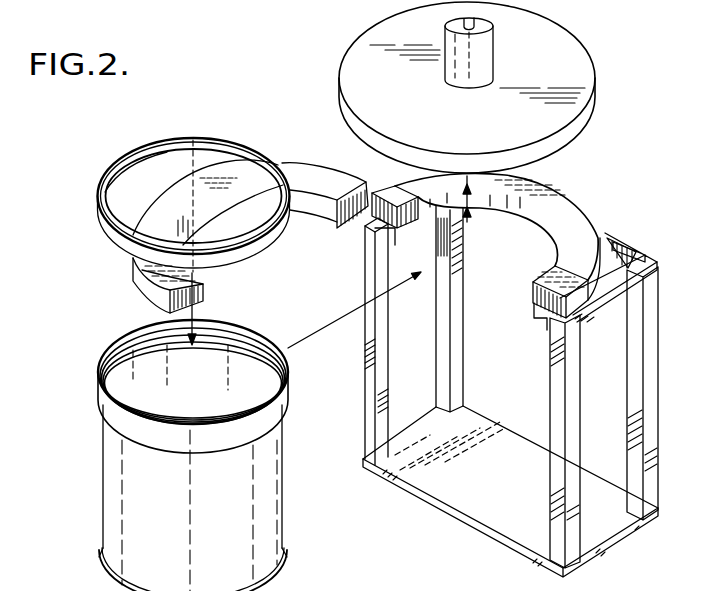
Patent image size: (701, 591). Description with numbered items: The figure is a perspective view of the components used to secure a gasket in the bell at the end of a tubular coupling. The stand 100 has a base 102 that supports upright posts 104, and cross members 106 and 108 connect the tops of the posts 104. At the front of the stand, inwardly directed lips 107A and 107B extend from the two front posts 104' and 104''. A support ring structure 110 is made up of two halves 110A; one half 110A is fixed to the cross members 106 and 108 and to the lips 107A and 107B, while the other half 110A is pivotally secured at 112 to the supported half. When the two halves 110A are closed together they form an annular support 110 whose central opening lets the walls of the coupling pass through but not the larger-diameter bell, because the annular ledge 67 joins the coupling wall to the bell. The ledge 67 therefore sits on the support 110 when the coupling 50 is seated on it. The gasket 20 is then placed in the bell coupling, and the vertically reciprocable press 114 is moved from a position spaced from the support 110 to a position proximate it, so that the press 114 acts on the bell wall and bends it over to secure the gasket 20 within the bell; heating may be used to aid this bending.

The gasket 20 is at (107, 187).
The coupling 50 is at (107, 453).
The ledge 67 is at (279, 428).
The stand 100 is at (515, 397).
The base 102 is at (600, 548).
The upright posts 104 is at (547, 363).
The post 104' is at (541, 441).
The post 104'' is at (401, 341).
The cross member 106 is at (613, 288).
The inwardly directed lip 107A is at (534, 318).
The inwardly directed lip 107B is at (392, 240).
The cross member 108 is at (615, 270).
The support ring structure 110 is at (515, 253).
The half of support ring structure 110A is at (562, 170).
The pivot 112 is at (368, 180).
The press 114 is at (572, 38).